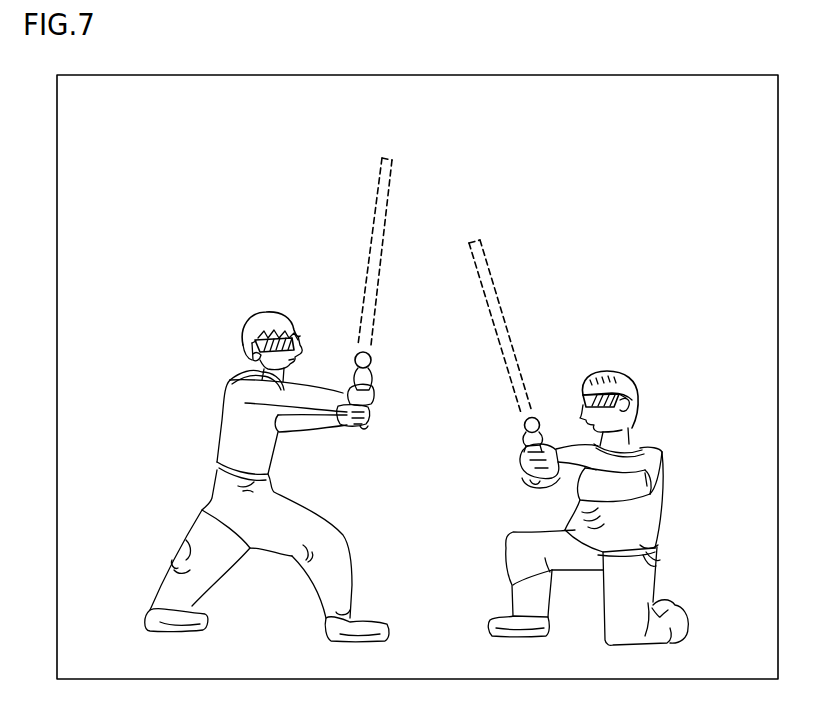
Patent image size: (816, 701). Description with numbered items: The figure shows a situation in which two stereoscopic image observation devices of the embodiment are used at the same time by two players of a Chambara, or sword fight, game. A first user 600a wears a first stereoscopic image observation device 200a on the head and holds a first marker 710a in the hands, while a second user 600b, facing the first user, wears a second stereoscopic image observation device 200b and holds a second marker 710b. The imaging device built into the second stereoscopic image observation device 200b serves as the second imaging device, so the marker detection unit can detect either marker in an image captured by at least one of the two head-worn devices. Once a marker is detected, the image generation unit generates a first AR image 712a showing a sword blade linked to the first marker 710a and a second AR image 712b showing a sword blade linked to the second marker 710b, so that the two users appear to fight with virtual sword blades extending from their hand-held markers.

The first user 600a is at (263, 312).
The first stereoscopic image observation device 200a is at (303, 340).
The first marker 710a is at (372, 361).
The first AR image 712a is at (386, 158).
The second user 600b is at (608, 372).
The second stereoscopic image observation device 200b is at (582, 398).
The second marker 710b is at (524, 428).
The second AR image 712b is at (480, 240).